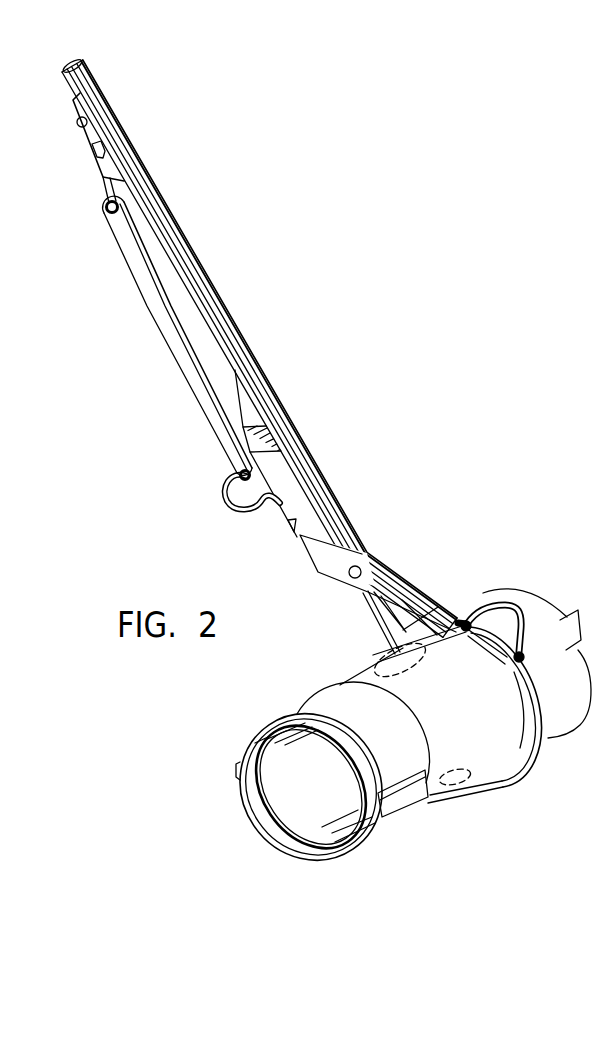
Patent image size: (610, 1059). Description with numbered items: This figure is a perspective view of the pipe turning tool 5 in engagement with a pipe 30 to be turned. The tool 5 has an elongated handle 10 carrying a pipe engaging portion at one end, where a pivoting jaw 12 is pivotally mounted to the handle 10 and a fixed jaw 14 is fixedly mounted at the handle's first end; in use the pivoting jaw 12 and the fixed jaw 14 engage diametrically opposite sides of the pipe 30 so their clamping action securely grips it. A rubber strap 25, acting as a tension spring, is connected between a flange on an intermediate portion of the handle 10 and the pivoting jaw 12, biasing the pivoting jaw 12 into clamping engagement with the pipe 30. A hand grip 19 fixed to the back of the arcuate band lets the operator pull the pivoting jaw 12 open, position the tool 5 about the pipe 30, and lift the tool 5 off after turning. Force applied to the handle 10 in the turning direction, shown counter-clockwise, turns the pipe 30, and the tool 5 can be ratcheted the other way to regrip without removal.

The pipe turning tool 5 is at (243, 206).
The elongated handle 10 is at (247, 346).
The pivoting jaw 12 is at (545, 716).
The fixed jaw 14 is at (390, 648).
The hand grip 19 is at (512, 594).
The rubber strap 25 is at (166, 336).
The pipe 30 is at (483, 722).